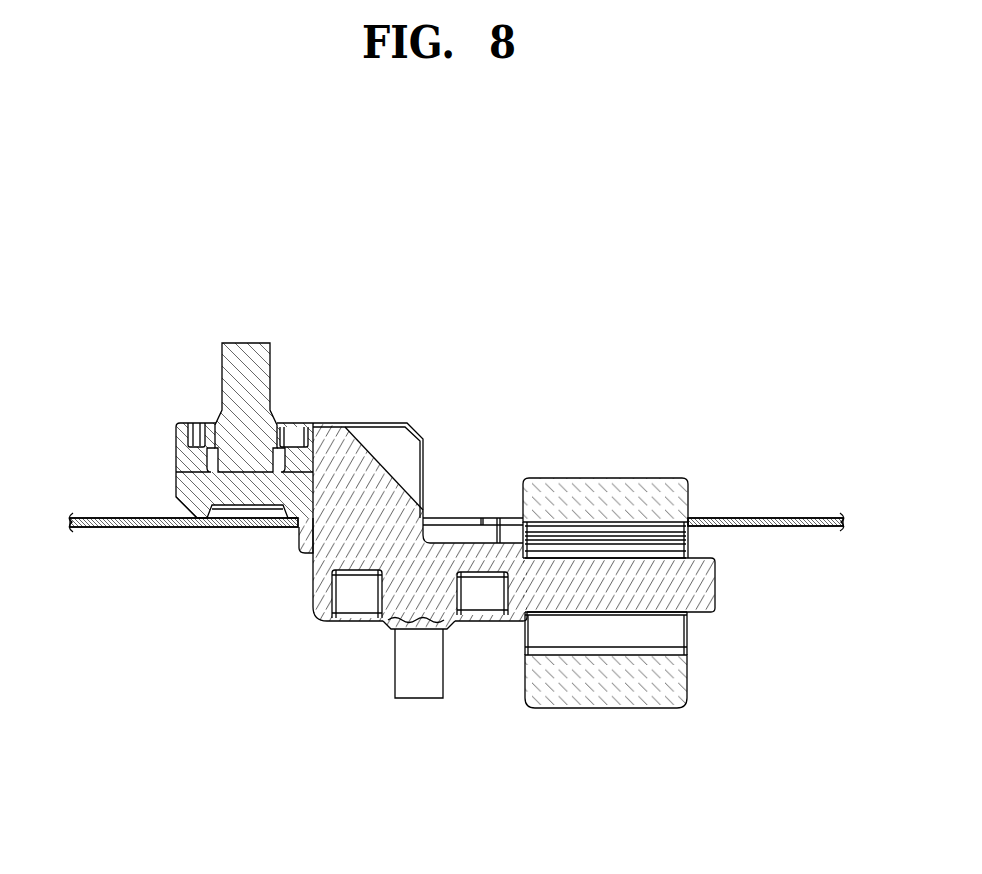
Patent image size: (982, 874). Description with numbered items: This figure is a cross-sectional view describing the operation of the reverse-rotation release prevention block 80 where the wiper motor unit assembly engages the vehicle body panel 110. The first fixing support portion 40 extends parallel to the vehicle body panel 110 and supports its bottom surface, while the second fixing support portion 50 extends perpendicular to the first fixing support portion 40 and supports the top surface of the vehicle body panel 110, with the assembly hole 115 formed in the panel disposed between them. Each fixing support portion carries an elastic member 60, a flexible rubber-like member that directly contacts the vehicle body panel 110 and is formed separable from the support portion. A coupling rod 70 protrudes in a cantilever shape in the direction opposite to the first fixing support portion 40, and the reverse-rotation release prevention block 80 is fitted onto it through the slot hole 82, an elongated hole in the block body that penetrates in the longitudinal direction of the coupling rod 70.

The first fixing support portion 40 is at (163, 443).
The second fixing support portion 50 is at (304, 626).
The elastic member 60 is at (282, 349).
The coupling rod 70 is at (703, 597).
The reverse-rotation release prevention block 80 is at (571, 638).
The slot hole 82 is at (620, 630).
The vehicle body panel 110 is at (118, 524).
The assembly hole 115 is at (504, 517).